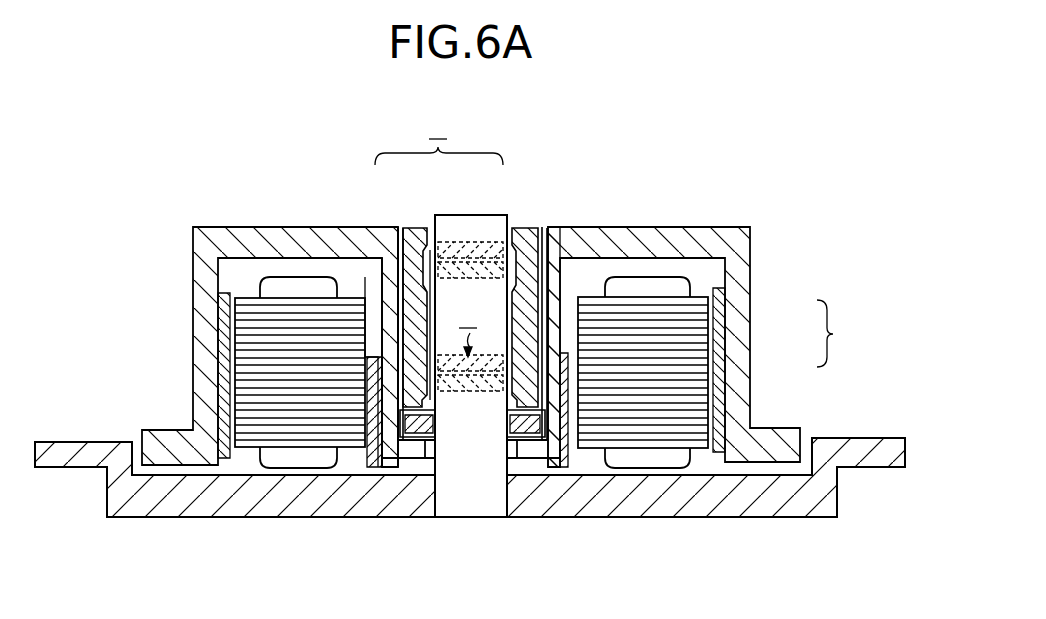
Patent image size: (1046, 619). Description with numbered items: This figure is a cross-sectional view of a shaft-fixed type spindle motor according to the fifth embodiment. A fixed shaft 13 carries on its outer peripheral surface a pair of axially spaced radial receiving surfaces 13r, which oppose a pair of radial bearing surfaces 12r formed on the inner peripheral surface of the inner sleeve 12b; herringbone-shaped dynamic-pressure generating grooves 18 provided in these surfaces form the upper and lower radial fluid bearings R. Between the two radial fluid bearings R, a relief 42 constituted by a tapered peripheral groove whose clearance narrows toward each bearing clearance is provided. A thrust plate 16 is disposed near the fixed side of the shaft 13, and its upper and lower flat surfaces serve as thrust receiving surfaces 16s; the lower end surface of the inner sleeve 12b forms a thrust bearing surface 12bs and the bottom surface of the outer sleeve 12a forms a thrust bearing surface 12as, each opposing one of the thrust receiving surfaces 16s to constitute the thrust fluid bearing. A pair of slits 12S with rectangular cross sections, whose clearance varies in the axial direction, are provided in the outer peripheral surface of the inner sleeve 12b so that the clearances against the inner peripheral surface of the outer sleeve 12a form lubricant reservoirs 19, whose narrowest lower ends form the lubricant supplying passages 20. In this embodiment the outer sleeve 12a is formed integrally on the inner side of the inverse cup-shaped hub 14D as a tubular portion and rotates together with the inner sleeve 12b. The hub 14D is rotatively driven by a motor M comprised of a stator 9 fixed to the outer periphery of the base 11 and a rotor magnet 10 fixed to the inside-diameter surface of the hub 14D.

The stator 9 is at (690, 317).
The rotor magnet 10 is at (727, 352).
The base 11 is at (807, 500).
The slits 12S is at (380, 292).
The outer sleeve 12a is at (552, 310).
The inner sleeve 12b is at (527, 245).
The thrust bearing surface 12as is at (522, 440).
The thrust bearing surface 12bs is at (562, 425).
The radial bearing surfaces 12r is at (418, 242).
The shaft 13 is at (478, 500).
The radial receiving surfaces 13r is at (430, 250).
The hub 14D is at (707, 238).
The thrust plate 16 is at (398, 458).
The thrust receiving surfaces 16s is at (442, 435).
The dynamic-pressure generating grooves 18 is at (480, 240).
The lubricant reservoirs 19 is at (398, 250).
The lubricant supplying passages 20 is at (375, 468).
The relief 42 is at (547, 250).
The radial fluid bearing R is at (439, 236).
The motor M is at (853, 345).